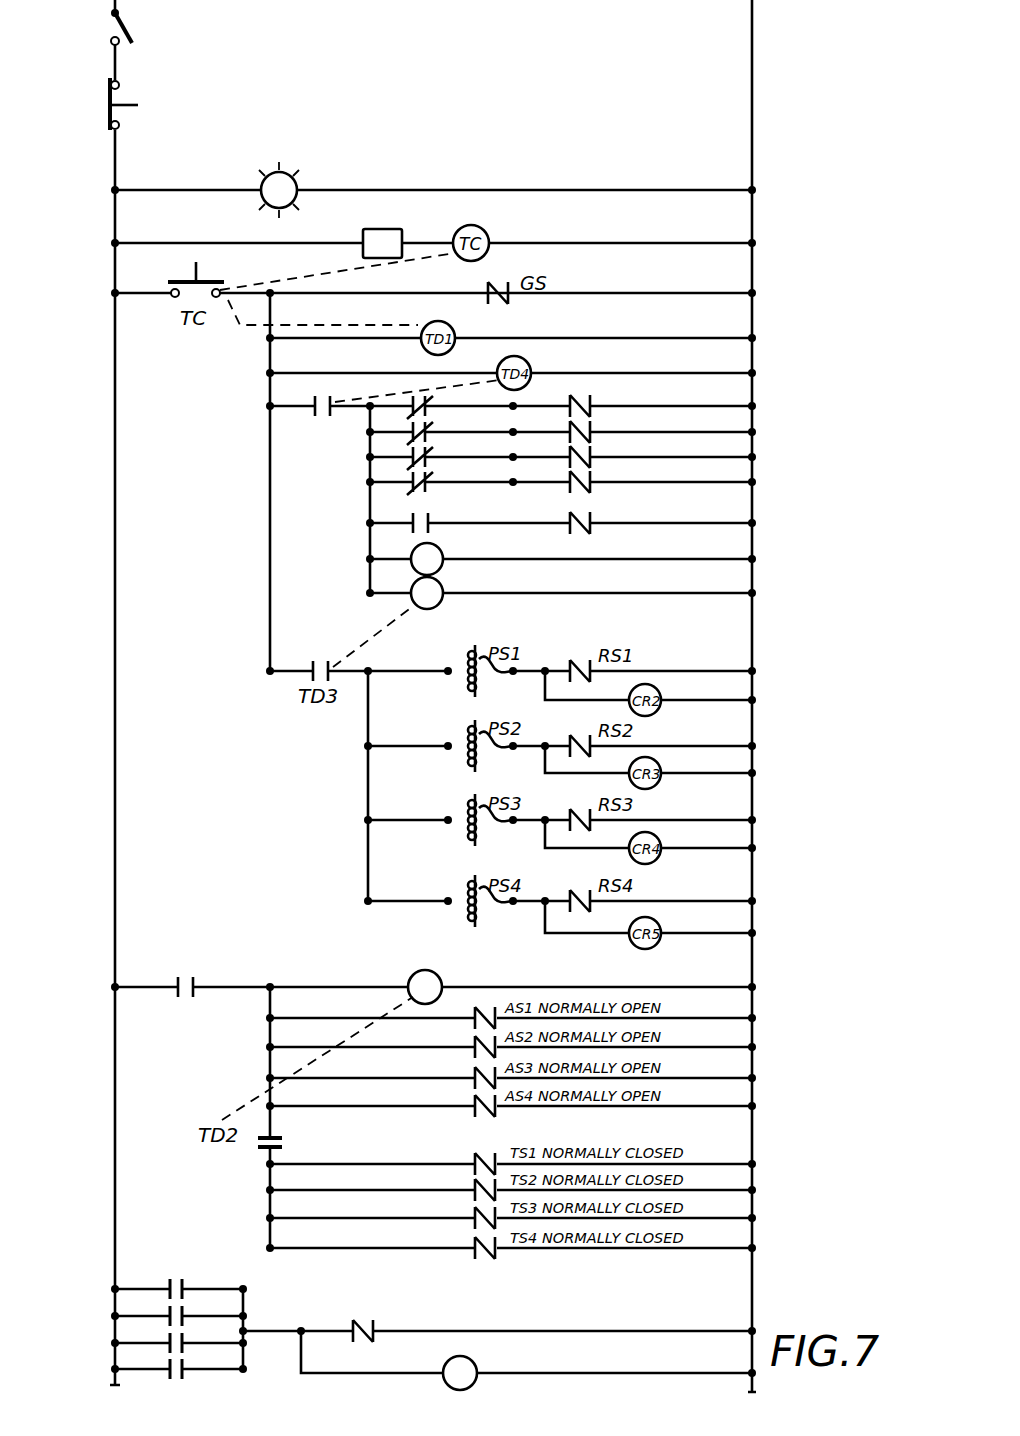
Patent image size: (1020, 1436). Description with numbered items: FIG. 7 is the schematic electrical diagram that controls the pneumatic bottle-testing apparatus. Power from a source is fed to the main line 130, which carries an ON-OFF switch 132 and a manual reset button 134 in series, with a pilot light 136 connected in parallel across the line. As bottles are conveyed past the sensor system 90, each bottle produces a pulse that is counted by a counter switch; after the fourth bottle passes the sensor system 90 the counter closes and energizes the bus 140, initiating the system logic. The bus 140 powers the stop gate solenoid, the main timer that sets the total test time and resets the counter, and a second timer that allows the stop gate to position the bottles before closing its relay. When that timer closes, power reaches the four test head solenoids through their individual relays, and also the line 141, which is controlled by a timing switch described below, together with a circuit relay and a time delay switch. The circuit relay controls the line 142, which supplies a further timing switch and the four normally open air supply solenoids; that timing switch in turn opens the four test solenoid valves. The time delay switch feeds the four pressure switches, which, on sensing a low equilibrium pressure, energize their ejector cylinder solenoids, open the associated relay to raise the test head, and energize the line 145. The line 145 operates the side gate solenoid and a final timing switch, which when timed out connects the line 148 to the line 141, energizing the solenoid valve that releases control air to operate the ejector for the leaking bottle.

The main line 130 is at (115, 418).
The ON-OFF switch 132 is at (112, 18).
The manual reset button 134 is at (108, 98).
The pilot light 136 is at (298, 180).
The sensor system 90 is at (373, 229).
The bus 140 is at (479, 494).
The line 141 is at (378, 526).
The line 148 is at (490, 528).
The line 142 is at (148, 990).
The line 145 is at (283, 1330).